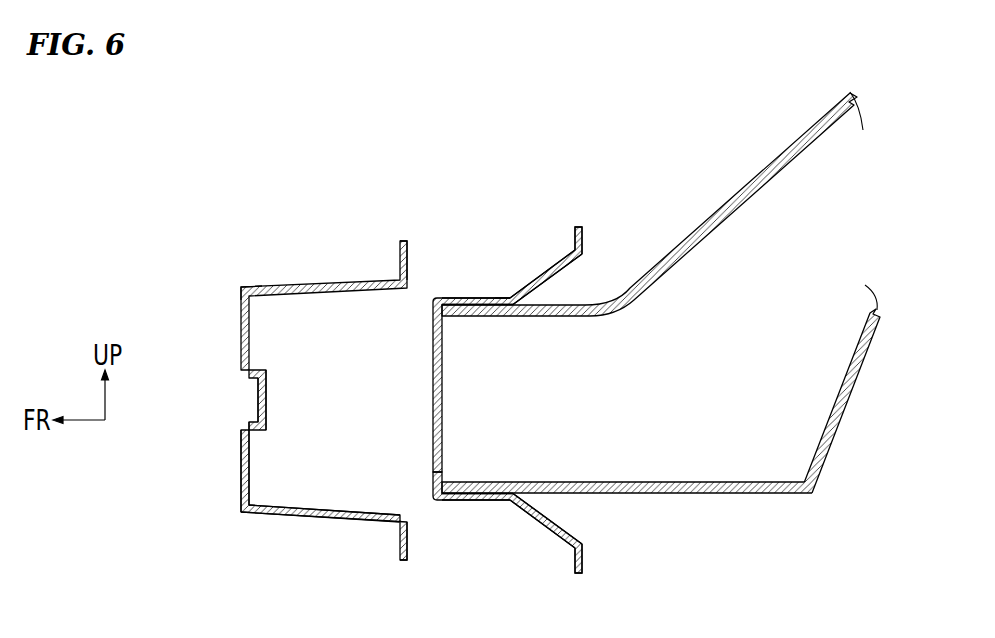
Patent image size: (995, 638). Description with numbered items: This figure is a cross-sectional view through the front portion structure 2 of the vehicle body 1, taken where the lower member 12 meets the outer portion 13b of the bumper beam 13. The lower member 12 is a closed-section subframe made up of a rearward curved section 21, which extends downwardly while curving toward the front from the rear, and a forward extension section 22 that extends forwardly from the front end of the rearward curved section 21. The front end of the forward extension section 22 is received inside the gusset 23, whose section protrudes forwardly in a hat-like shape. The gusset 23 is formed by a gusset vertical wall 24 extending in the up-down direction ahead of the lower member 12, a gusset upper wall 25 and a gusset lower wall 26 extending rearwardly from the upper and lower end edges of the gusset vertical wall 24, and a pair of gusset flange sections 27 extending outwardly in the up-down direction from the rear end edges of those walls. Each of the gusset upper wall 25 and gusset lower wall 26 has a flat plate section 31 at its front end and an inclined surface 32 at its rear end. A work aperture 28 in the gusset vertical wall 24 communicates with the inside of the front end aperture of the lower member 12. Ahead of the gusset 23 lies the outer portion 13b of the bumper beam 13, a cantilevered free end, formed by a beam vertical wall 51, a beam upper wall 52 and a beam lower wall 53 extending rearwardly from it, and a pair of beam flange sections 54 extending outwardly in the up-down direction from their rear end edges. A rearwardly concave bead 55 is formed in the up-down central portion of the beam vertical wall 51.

The vehicle body 1 is at (130, 205).
The front portion structure 2 is at (242, 371).
The lower member 12 is at (692, 136).
The bumper beam 13 is at (277, 384).
The outer portion 13b is at (288, 277).
The rearward curved section 21 is at (795, 343).
The forward extension section 22 is at (684, 460).
The gusset 23 is at (489, 292).
The gusset vertical wall 24 is at (443, 320).
The gusset upper wall 25 is at (503, 298).
The gusset lower wall 26 is at (497, 503).
The gusset flange section 27 is at (583, 242).
The work aperture 28 is at (435, 340).
The flat plate section 31 is at (462, 298).
The inclined surface 32 is at (558, 272).
The beam vertical wall 51 is at (240, 473).
The beam upper wall 52 is at (260, 287).
The beam lower wall 53 is at (262, 515).
The beam flange section 54 is at (397, 253).
The bead 55 is at (257, 400).